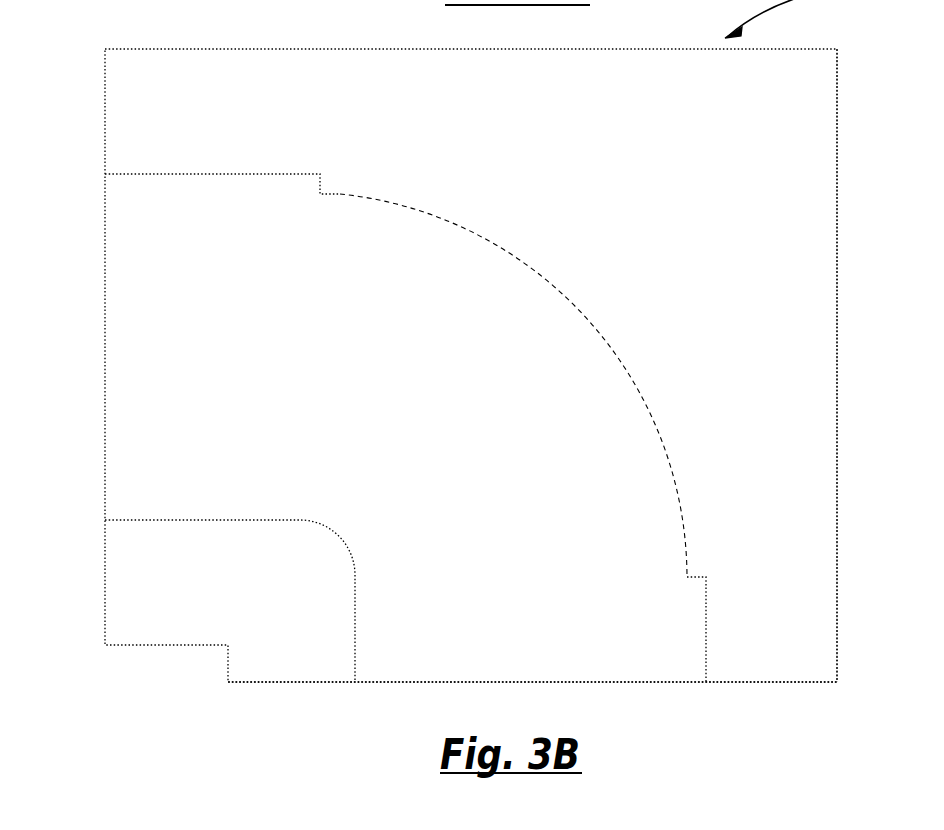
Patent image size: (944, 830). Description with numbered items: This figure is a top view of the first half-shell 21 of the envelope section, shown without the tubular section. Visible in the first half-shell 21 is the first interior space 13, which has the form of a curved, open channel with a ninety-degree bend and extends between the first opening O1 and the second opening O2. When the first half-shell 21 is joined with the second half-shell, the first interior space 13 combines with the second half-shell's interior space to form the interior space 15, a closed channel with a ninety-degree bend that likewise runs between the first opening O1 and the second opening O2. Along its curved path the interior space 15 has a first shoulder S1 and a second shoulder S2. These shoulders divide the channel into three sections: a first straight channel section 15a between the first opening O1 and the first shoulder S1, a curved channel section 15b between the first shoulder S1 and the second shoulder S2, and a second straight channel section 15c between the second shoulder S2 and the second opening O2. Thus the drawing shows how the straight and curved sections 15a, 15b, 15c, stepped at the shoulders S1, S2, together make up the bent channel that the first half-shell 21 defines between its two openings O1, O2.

The interior space 15 is at (72, 0).
The first straight channel section 15a is at (575, 648).
The curved channel section 15b is at (425, 460).
The second straight channel section 15c is at (238, 368).
The first interior space 13 is at (473, 383).
The first shoulder S1 is at (706, 576).
The second shoulder S2 is at (321, 178).
The first offset O1 is at (425, 684).
The second offset O2 is at (103, 330).
The first half-shell 21 is at (763, 657).